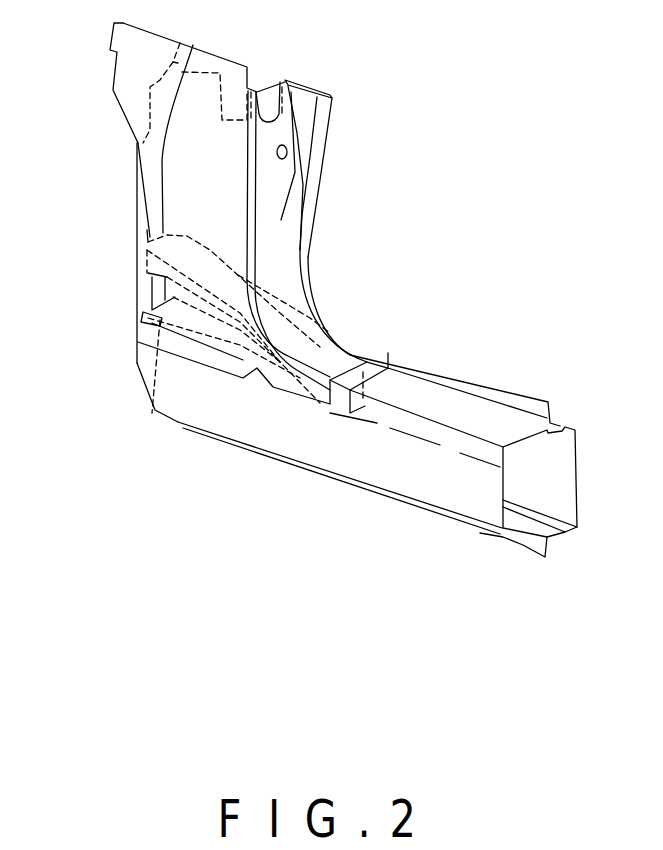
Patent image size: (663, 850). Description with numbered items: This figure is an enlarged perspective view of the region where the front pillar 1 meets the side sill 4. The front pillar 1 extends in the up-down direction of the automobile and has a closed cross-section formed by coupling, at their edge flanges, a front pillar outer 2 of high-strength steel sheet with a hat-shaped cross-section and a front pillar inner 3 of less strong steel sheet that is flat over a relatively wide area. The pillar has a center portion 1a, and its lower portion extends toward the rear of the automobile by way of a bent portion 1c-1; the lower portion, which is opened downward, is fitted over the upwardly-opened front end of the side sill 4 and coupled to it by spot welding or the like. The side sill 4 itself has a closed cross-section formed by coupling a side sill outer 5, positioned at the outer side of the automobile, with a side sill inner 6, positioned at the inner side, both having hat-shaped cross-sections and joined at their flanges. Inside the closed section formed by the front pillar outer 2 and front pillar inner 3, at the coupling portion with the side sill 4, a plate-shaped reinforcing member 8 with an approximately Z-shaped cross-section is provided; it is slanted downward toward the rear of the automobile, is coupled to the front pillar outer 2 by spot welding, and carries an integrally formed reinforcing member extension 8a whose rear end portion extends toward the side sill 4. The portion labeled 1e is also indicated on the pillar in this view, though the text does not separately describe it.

The front pillar 1 is at (110, 217).
The center portion 1a is at (137, 167).
The bent portion 1c-1 is at (138, 343).
The inner flange 1e is at (220, 362).
The front pillar outer 2 is at (122, 94).
The front pillar inner 3 is at (285, 80).
The side sill 4 is at (407, 520).
The side sill outer 5 is at (459, 497).
The side sill inner 6 is at (578, 480).
The reinforcing member 8 is at (195, 308).
The reinforcing member extension 8a is at (377, 367).